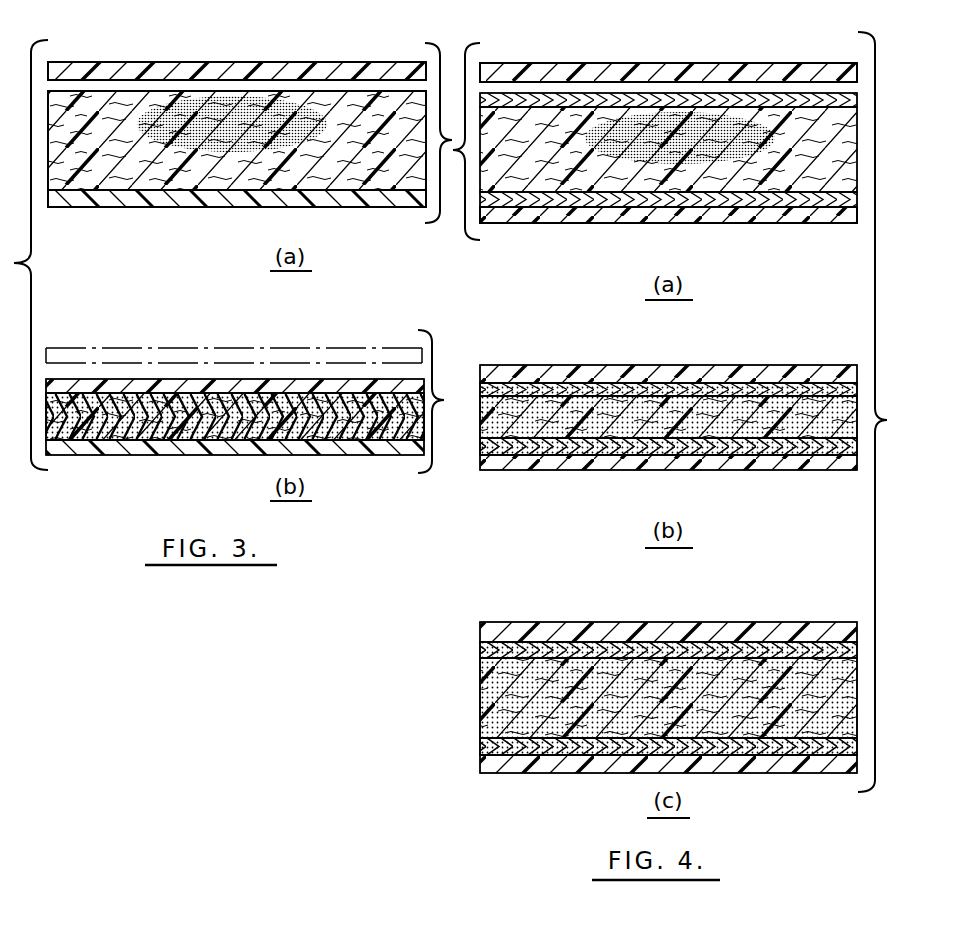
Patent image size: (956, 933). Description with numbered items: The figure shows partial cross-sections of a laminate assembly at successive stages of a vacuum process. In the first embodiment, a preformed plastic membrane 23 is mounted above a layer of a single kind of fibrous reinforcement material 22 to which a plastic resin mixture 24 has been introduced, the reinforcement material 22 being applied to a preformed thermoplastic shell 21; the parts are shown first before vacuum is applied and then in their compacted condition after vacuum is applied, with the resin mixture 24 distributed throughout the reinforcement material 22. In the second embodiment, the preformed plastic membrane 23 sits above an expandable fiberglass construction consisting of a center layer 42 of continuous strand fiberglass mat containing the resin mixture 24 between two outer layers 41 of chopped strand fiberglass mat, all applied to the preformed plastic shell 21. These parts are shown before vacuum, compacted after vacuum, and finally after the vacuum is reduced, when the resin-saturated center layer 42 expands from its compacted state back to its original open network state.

In FIG. 3, the preformed thermoplastic shell 21 is at (225, 197).
In FIG. 4, the preformed thermoplastic shell 21 is at (793, 212).
In FIG. 3, the fibrous reinforcement material 22 is at (118, 172).
In FIG. 3, the preformed plastic membrane 23 is at (146, 74).
In FIG. 4, the preformed plastic membrane 23 is at (772, 74).
In FIG. 3, the plastic resin mixture 24 is at (237, 100).
In FIG. 4, the plastic resin mixture 24 is at (655, 106).
In FIG. 4, the outer layers of chopped strand fiberglass mat 41 is at (560, 100).
In FIG. 4, the center layer of continuous strand fiberglass mat 42 is at (572, 176).